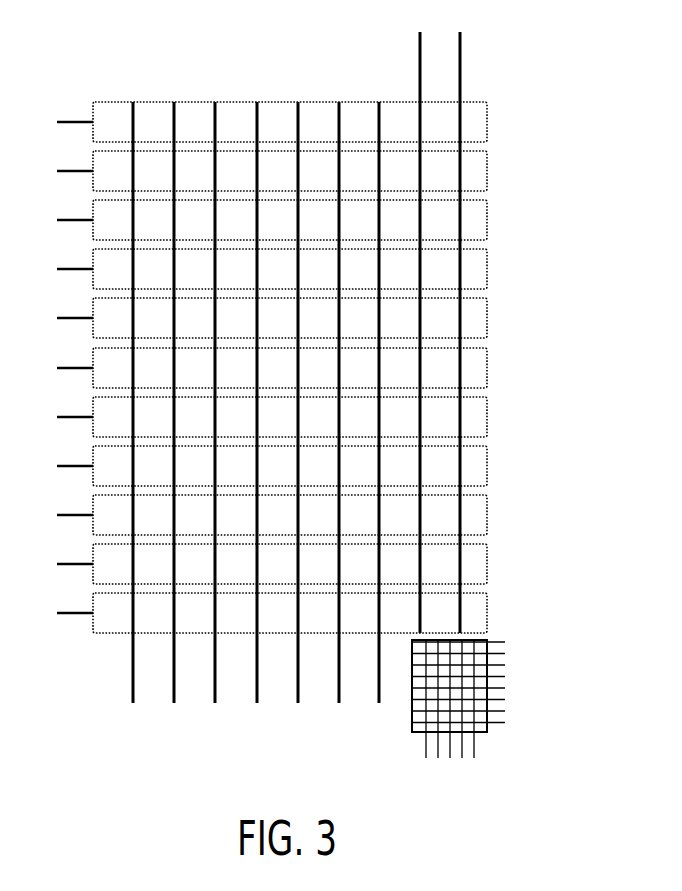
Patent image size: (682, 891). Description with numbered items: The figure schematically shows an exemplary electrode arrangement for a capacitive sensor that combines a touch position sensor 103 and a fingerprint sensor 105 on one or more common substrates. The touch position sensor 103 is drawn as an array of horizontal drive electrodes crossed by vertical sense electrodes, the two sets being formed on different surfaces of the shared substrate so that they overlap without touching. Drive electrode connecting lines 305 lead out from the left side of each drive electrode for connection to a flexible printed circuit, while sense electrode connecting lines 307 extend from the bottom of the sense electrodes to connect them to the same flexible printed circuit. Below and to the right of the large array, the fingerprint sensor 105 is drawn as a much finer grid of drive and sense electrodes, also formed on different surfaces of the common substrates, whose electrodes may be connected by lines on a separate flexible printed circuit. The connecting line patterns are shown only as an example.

The touch sensor array 103 is at (298, 397).
The secondary sensor grid 105 is at (463, 704).
The row lead lines 305 is at (72, 372).
The column lead lines 307 is at (124, 703).